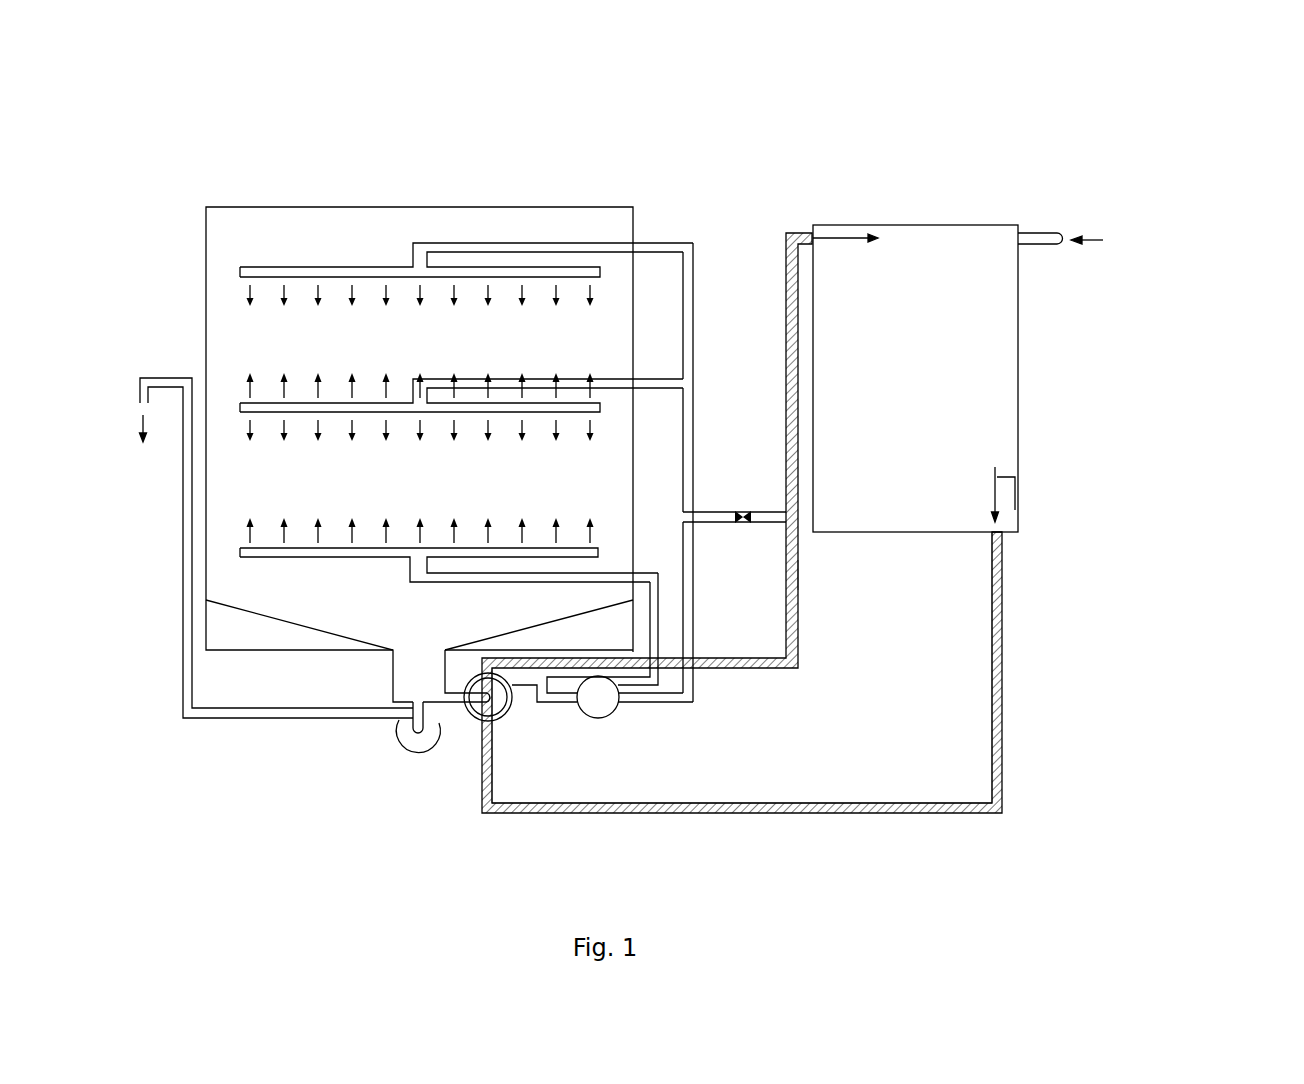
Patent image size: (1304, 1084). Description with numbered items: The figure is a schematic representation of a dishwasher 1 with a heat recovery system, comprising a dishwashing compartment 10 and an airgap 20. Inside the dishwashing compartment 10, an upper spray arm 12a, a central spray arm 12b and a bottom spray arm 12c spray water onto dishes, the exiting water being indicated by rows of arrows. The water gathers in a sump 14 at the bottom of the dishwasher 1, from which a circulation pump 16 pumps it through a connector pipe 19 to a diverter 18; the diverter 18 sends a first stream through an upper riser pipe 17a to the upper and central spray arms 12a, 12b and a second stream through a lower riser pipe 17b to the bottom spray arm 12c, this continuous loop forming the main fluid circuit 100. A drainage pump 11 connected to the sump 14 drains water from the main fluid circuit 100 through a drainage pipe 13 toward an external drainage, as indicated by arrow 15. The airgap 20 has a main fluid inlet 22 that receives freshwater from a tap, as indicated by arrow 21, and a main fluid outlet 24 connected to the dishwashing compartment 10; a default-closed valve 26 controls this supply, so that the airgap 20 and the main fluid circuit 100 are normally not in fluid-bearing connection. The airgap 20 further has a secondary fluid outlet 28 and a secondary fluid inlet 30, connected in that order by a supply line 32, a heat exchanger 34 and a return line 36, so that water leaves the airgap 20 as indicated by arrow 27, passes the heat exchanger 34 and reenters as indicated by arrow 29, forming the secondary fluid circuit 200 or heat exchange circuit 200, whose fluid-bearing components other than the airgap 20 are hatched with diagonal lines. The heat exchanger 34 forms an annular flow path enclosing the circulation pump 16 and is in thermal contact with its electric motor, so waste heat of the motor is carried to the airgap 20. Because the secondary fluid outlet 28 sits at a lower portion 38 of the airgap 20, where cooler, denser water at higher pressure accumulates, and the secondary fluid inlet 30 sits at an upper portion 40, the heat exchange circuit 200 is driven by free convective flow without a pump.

The dishwasher 1 is at (160, 148).
The dishwashing compartment 10 is at (535, 207).
The drainage pump 11 is at (410, 740).
The upper spray arm 12a is at (420, 255).
The central spray arm 12b is at (357, 405).
The bottom spray arm 12c is at (410, 565).
The drainage pipe 13 is at (185, 567).
The sump 14 is at (407, 685).
The arrow 15 is at (142, 426).
The circulation pump 16 is at (495, 707).
The upper riser pipe 17a is at (697, 276).
The lower riser pipe 17b is at (655, 617).
The diverter 18 is at (610, 708).
The connector pipe 19 is at (557, 705).
The airgap 20 is at (920, 225).
The arrow 21 is at (1092, 245).
The main fluid inlet 22 is at (1050, 233).
The main fluid outlet 24 is at (772, 524).
The valve 26 is at (747, 510).
The arrow 27 is at (1003, 480).
The secondary fluid outlet 28 is at (1002, 540).
The arrow 29 is at (850, 238).
The secondary fluid inlet 30 is at (800, 232).
The supply line 32 is at (720, 814).
The heat exchanger 34 is at (480, 722).
The return line 36 is at (798, 573).
The lower portion 38 is at (1158, 493).
The upper portion 40 is at (908, 118).
The main fluid circuit 100 is at (697, 158).
The secondary fluid circuit 200 is at (1055, 790).